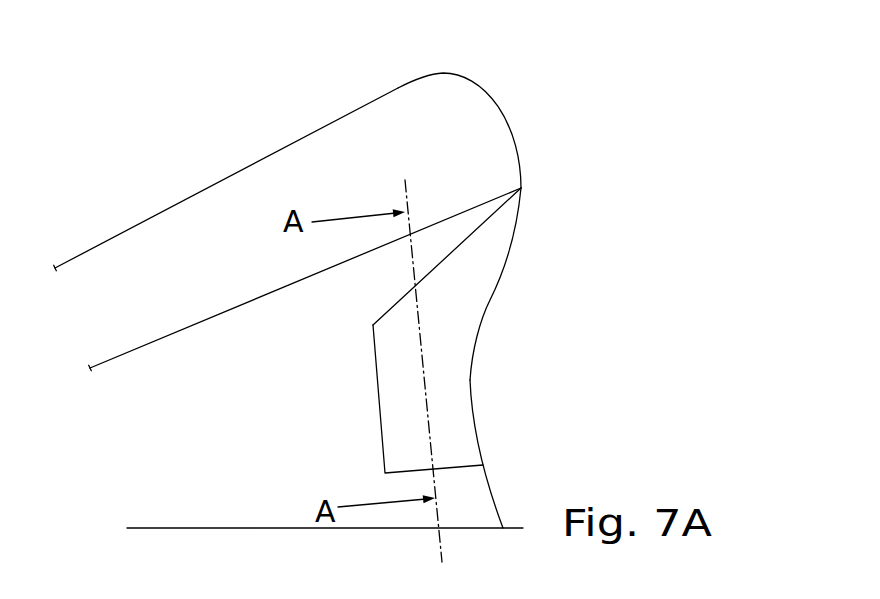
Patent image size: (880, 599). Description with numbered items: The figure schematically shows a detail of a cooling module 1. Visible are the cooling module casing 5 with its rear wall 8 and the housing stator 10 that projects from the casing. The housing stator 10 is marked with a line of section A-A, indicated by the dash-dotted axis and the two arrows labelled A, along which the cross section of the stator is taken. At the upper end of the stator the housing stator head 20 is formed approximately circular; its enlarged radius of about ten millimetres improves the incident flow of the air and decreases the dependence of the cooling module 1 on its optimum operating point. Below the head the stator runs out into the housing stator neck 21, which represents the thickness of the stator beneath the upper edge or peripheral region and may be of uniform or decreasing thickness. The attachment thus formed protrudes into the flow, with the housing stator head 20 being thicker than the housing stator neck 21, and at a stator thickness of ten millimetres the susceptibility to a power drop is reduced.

The cooling module 1 is at (242, 132).
The cooling module casing 5 is at (493, 138).
The housing stator 10 is at (467, 282).
The housing stator head 20 is at (412, 287).
The housing stator neck 21 is at (398, 403).
The rear wall 8 is at (492, 485).